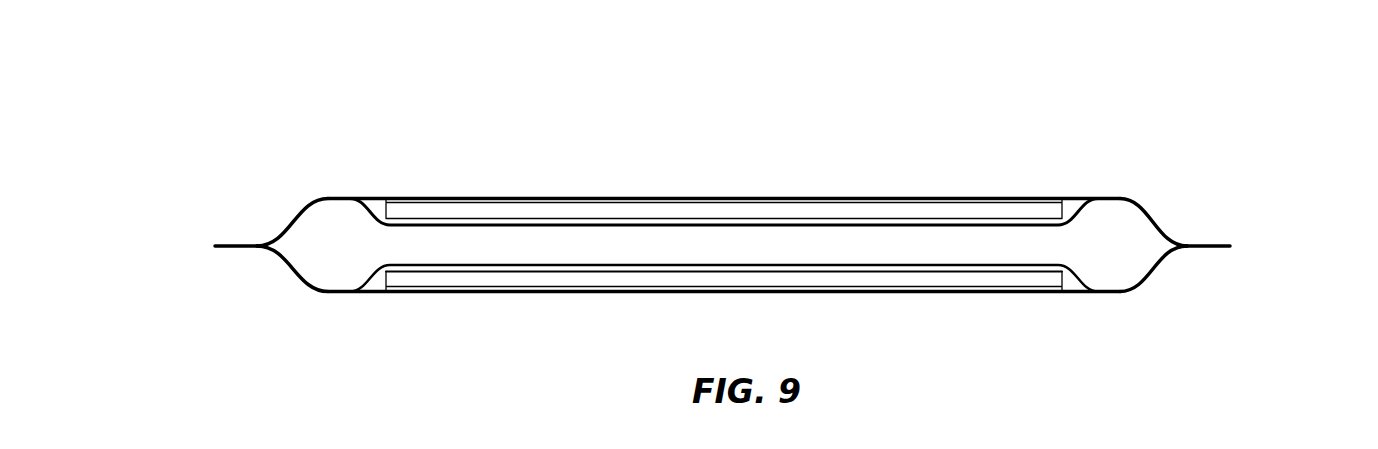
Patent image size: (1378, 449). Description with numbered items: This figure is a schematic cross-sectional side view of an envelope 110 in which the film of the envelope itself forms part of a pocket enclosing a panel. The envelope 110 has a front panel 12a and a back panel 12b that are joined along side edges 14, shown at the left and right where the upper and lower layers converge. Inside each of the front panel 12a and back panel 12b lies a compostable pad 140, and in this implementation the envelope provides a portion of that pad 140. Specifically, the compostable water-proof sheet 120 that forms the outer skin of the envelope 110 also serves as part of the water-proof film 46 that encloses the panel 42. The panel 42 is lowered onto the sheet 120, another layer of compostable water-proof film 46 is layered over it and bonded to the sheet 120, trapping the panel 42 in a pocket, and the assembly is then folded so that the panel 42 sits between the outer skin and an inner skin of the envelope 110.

The envelope 110 is at (452, 95).
The side edges 14 is at (237, 246).
The compostable pad 140 is at (470, 196).
The sheet 120 is at (1143, 205).
The front panel 12a is at (830, 198).
The back panel 12b is at (823, 293).
The compostable water-proof film 46 is at (764, 227).
The panel 42 is at (788, 212).